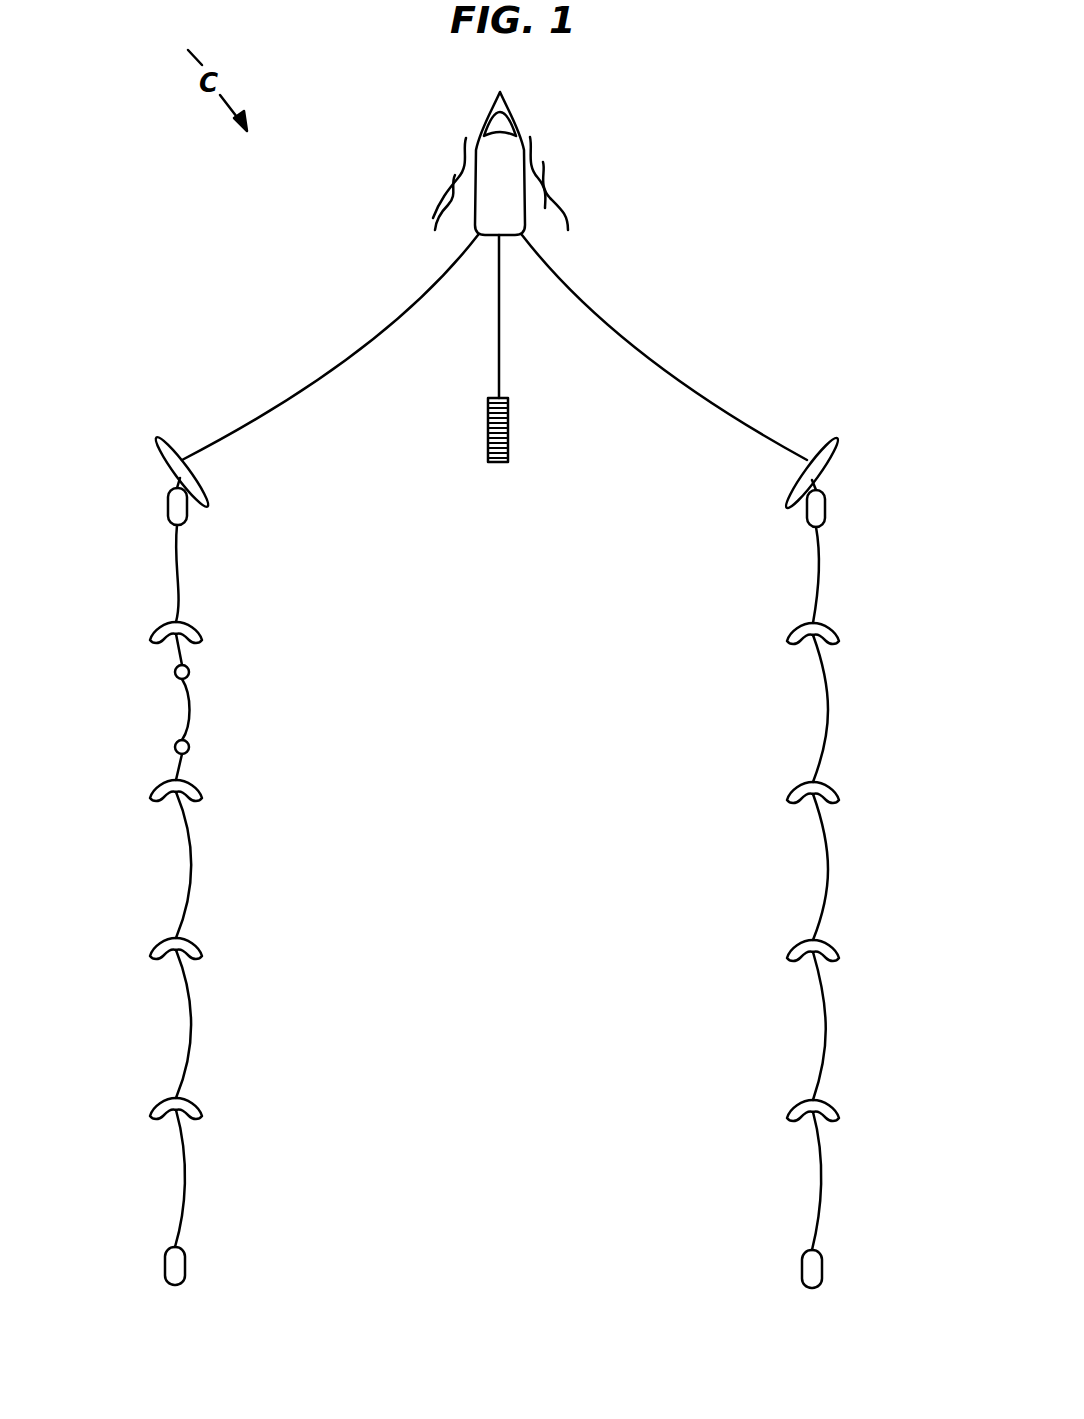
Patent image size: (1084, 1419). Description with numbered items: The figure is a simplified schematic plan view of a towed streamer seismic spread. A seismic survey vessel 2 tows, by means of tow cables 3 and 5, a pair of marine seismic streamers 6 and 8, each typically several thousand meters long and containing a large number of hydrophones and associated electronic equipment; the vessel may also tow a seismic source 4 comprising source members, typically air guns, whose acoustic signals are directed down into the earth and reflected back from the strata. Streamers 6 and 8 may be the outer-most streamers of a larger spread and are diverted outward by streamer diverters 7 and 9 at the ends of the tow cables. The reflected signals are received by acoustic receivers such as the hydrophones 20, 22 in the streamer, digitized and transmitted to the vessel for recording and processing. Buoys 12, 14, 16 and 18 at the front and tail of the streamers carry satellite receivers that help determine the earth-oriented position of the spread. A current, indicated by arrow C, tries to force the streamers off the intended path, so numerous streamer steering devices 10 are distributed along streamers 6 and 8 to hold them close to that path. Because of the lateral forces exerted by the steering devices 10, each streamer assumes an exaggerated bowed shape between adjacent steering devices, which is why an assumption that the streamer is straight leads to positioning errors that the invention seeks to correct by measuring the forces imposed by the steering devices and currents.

The seismic survey vessel 2 is at (483, 113).
The tow cable 3 is at (398, 317).
The seismic source 4 is at (508, 437).
The tow cable 5 is at (633, 347).
The marine seismic streamer 6 is at (178, 560).
The streamer diverter 7 is at (157, 440).
The marine seismic streamer 8 is at (826, 557).
The streamer diverter 9 is at (838, 440).
The streamer steering device 10 is at (154, 632).
The buoy 12 is at (168, 512).
The buoy 14 is at (165, 1265).
The buoy 16 is at (826, 512).
The buoy 18 is at (822, 1268).
The acoustic receiver 20 is at (190, 670).
The acoustic receiver 22 is at (190, 748).